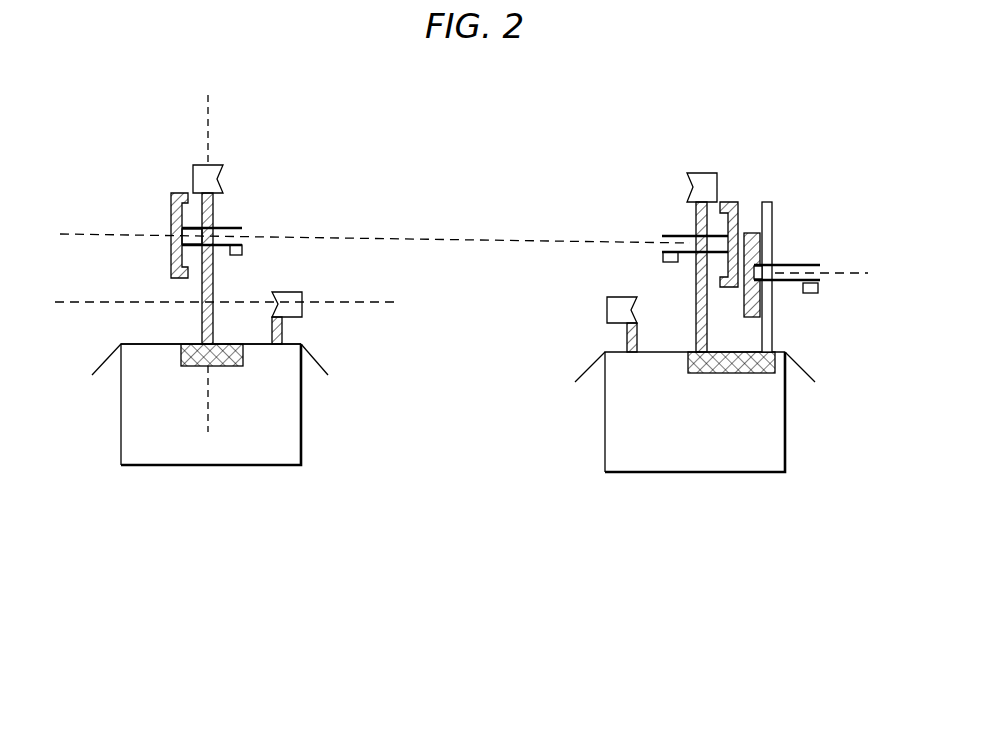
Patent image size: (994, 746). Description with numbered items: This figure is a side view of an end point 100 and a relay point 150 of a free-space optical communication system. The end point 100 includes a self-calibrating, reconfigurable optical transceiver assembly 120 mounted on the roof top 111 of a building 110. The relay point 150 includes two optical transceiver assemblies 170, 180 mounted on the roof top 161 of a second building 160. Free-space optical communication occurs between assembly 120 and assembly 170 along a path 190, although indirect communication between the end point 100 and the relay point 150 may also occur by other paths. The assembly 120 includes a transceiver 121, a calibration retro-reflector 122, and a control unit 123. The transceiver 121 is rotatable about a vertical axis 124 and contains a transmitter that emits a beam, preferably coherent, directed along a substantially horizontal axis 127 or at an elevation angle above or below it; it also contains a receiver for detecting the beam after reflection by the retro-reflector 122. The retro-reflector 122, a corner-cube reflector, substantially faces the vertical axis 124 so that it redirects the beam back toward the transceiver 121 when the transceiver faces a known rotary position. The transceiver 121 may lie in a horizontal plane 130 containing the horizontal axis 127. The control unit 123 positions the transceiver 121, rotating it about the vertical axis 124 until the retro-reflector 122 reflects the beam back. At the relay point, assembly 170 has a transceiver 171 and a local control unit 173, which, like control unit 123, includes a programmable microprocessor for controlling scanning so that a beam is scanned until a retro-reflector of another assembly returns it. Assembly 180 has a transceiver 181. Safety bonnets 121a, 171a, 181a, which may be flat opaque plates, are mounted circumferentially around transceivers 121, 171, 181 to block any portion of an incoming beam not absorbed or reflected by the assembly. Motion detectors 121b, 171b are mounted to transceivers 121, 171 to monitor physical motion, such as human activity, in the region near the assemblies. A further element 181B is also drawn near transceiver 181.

The end point 100 is at (326, 495).
The building 110 is at (120, 424).
The roof top 111 is at (150, 343).
The optical transceiver assembly 120 is at (312, 145).
The transceiver 121 is at (228, 228).
The safety bonnet 121a is at (170, 250).
The motion detector 121b is at (245, 251).
The calibration retro-reflector 122 is at (303, 295).
The control unit 123 is at (186, 367).
The vertical axis 124 is at (210, 130).
The horizontal axis 127 is at (85, 301).
The horizontal plane 130 is at (338, 305).
The relay point 150 is at (815, 501).
The building 160 is at (605, 432).
The roof top 161 is at (615, 350).
The optical transceiver assembly 170 is at (600, 272).
The transceiver 171 is at (665, 215).
The safety bonnet 171a is at (738, 290).
The motion detector 171b is at (670, 264).
The control unit 173 is at (727, 374).
The optical transceiver assembly 180 is at (812, 326).
The transceiver 181 is at (800, 266).
The safety bonnet 181a is at (745, 232).
The contact tab 181B is at (820, 288).
The path 190 is at (460, 240).